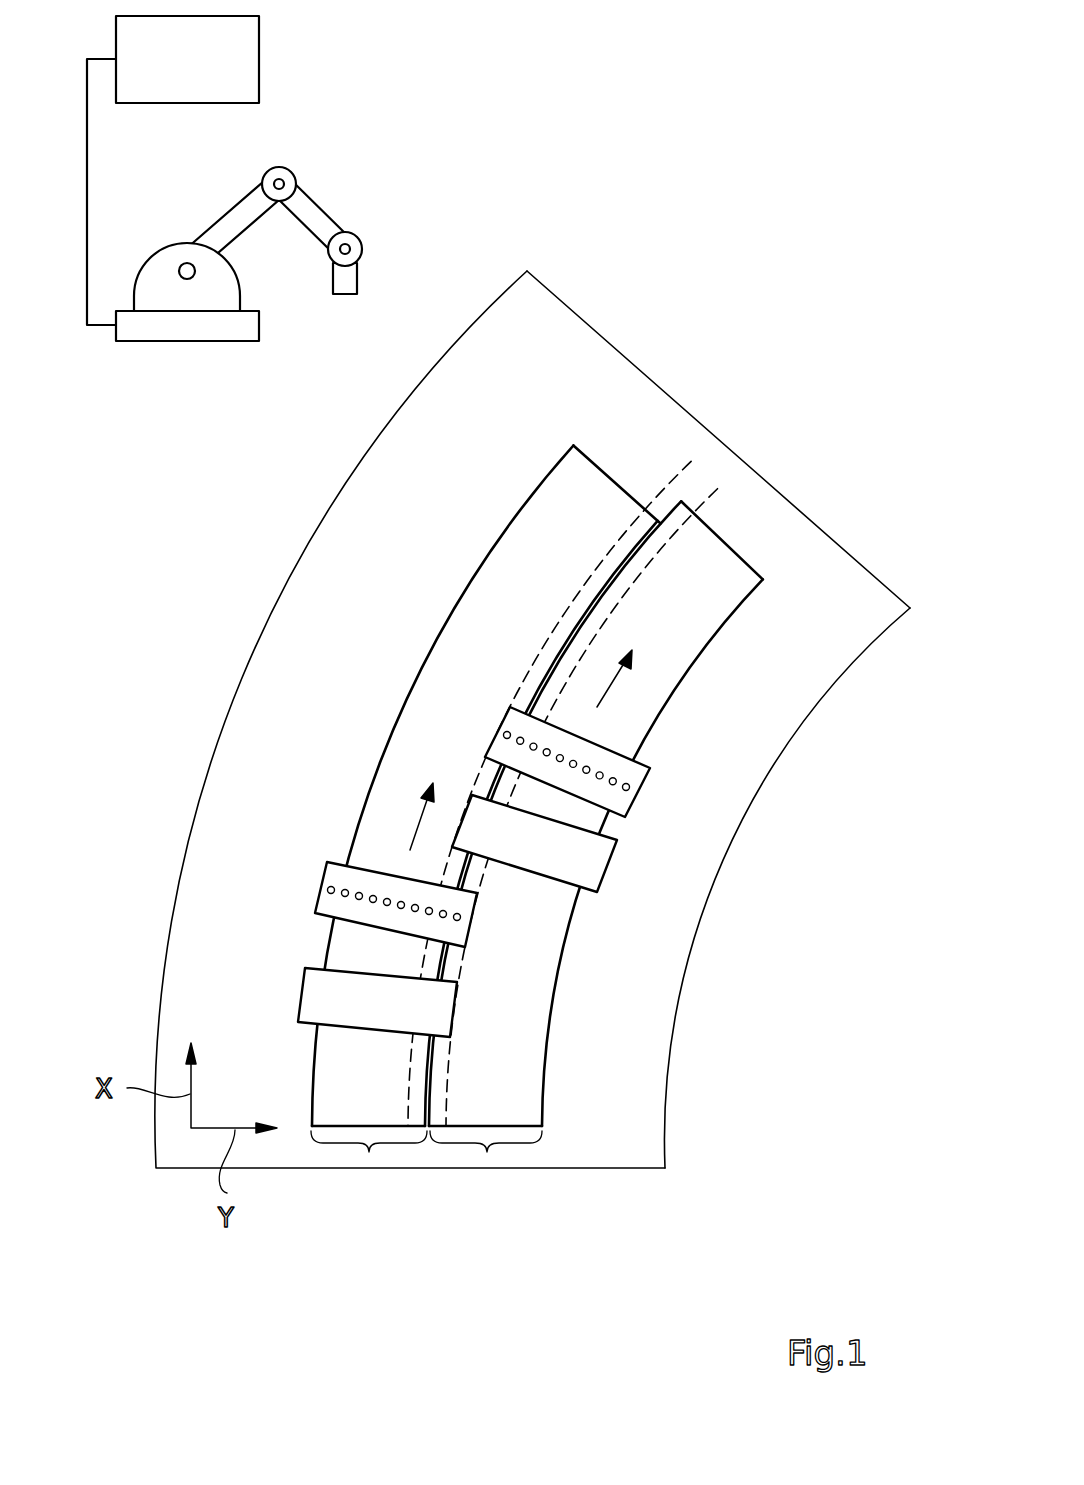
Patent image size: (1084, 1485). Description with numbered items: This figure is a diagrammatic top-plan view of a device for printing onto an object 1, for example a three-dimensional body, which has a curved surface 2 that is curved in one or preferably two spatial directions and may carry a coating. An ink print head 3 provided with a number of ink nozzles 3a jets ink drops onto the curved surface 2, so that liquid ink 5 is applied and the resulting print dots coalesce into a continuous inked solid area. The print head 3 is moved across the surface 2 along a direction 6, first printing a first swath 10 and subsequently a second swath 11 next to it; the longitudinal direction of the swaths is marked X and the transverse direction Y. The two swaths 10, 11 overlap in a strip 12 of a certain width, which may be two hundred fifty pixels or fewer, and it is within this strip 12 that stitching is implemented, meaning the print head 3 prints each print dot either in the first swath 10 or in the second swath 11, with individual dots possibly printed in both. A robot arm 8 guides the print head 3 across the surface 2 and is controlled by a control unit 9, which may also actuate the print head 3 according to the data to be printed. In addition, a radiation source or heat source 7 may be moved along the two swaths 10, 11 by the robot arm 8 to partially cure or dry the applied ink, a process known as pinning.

The object 1 is at (815, 720).
The curved surface 2 is at (765, 790).
The ink print head 3 is at (483, 835).
The ink nozzles 3a is at (328, 888).
The liquid ink 5 is at (583, 463).
The direction 6 is at (607, 688).
The radiation source or heat source 7 is at (455, 1008).
The robot arm 8 is at (327, 205).
The control unit 9 is at (260, 59).
The first swath 10 is at (369, 1152).
The second swath 11 is at (487, 1152).
The strip 12 is at (719, 488).